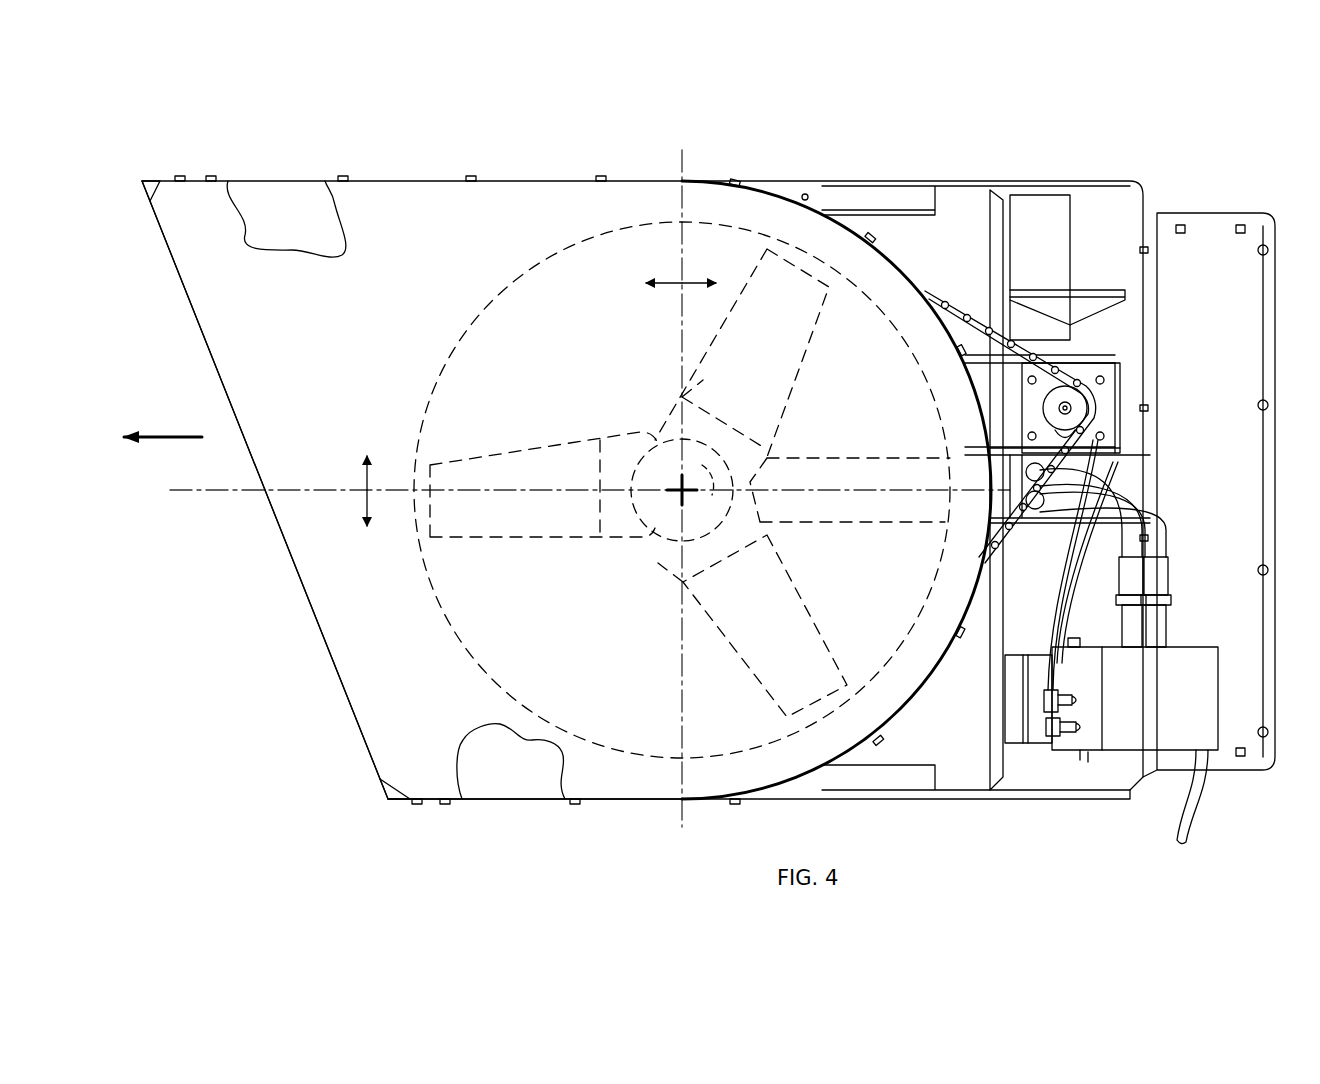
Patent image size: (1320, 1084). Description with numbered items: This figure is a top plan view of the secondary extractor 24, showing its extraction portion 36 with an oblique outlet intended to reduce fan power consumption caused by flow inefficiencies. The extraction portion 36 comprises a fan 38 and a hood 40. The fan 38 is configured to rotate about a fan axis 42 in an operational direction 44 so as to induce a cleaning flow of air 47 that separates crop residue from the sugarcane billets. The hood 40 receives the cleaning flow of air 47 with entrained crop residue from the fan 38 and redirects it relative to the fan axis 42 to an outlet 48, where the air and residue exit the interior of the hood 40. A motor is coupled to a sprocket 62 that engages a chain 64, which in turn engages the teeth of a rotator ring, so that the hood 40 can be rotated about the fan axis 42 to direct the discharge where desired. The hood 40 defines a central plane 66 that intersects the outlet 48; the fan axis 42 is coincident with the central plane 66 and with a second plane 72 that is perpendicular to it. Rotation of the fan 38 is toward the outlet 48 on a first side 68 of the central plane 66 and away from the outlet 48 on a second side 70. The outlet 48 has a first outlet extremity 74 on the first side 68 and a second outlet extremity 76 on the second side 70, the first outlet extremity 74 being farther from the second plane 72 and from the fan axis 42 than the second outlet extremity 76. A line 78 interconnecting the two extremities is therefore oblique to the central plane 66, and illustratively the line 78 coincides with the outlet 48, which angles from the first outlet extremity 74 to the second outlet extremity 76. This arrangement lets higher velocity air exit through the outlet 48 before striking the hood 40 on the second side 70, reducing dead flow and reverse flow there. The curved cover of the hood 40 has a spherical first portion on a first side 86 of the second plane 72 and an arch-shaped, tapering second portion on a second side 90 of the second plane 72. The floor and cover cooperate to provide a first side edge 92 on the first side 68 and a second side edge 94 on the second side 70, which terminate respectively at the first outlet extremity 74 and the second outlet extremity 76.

The secondary extractor 24 is at (486, 818).
The extraction portion 36 is at (598, 815).
The fan 38 is at (535, 440).
The hood 40 is at (412, 158).
The fan axis 42 is at (682, 490).
The operational direction 44 is at (722, 430).
The cleaning flow of air 47 is at (163, 435).
The outlet 48 is at (347, 690).
The sprocket 62 is at (1080, 406).
The chain 64 is at (963, 330).
The central plane 66 is at (505, 500).
The first side 68 is at (362, 477).
The second side 70 is at (362, 505).
The second plane 72 is at (680, 723).
The first outlet extremity 74 is at (142, 181).
The second outlet extremity 76 is at (390, 798).
The line 78 is at (312, 603).
The first side of the second plane 86 is at (700, 283).
The second side of the second plane 90 is at (662, 283).
The first side edge 92 is at (262, 182).
The second side edge 94 is at (493, 798).